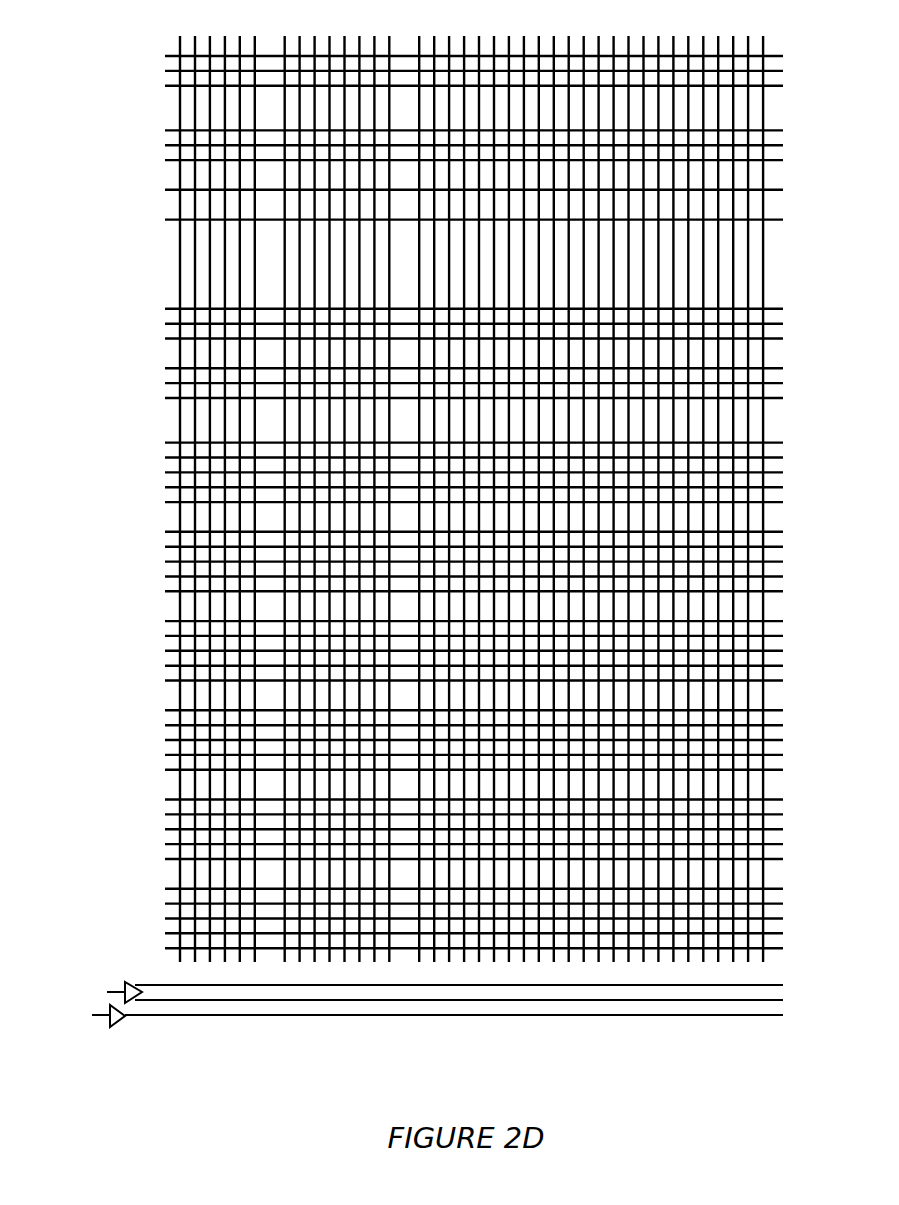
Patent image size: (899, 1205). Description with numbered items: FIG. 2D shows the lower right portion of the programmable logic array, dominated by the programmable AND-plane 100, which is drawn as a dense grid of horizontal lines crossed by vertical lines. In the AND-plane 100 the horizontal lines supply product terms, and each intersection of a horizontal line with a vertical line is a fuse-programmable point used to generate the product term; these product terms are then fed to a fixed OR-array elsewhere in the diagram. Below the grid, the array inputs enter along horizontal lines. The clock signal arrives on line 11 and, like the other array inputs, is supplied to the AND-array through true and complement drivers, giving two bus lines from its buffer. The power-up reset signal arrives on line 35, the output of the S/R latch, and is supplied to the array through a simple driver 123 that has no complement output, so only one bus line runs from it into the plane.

The programmable AND-plane 100 is at (143, 961).
The clock signal line 11 is at (118, 983).
The PURST signal line 35 is at (105, 1017).
The simple driver 123 is at (120, 1022).